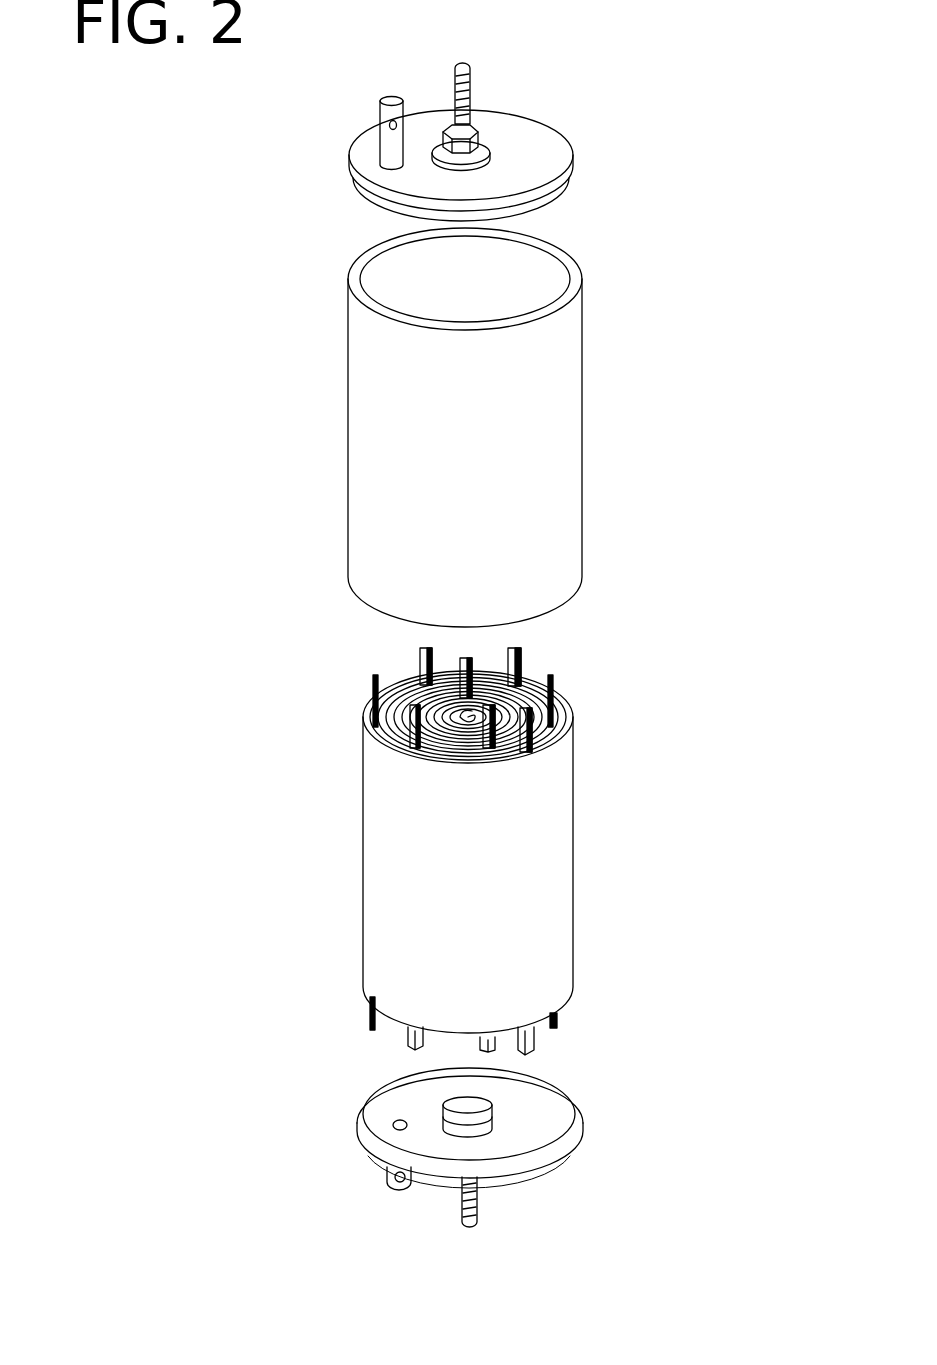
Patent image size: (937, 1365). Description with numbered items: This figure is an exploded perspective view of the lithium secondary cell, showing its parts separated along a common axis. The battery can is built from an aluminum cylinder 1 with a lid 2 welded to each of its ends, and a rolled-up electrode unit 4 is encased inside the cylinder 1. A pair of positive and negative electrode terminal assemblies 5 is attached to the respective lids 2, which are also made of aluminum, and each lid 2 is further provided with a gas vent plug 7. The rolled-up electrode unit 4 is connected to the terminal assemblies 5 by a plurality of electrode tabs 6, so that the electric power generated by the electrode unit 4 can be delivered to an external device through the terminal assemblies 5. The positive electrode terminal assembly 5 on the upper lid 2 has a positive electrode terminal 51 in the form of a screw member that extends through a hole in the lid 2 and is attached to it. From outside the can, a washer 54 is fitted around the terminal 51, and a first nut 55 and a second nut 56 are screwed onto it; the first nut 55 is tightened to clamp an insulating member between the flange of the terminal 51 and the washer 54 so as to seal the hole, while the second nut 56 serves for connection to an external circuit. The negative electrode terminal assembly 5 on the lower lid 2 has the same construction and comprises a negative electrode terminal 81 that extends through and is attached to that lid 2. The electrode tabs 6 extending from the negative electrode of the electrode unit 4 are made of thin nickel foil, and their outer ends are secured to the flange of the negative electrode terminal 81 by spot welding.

The aluminum cylinder 1 is at (571, 440).
The lid 2 is at (552, 157).
The rolled-up electrode unit 4 is at (560, 888).
The electrode terminal assembly 5 is at (490, 655).
The electrode tab 6 is at (420, 660).
The gas vent plug 7 is at (378, 114).
The positive electrode terminal 51 is at (462, 62).
The washer 54 is at (436, 148).
The first nut 55 is at (494, 150).
The second nut 56 is at (468, 124).
The negative electrode terminal 81 is at (462, 1213).